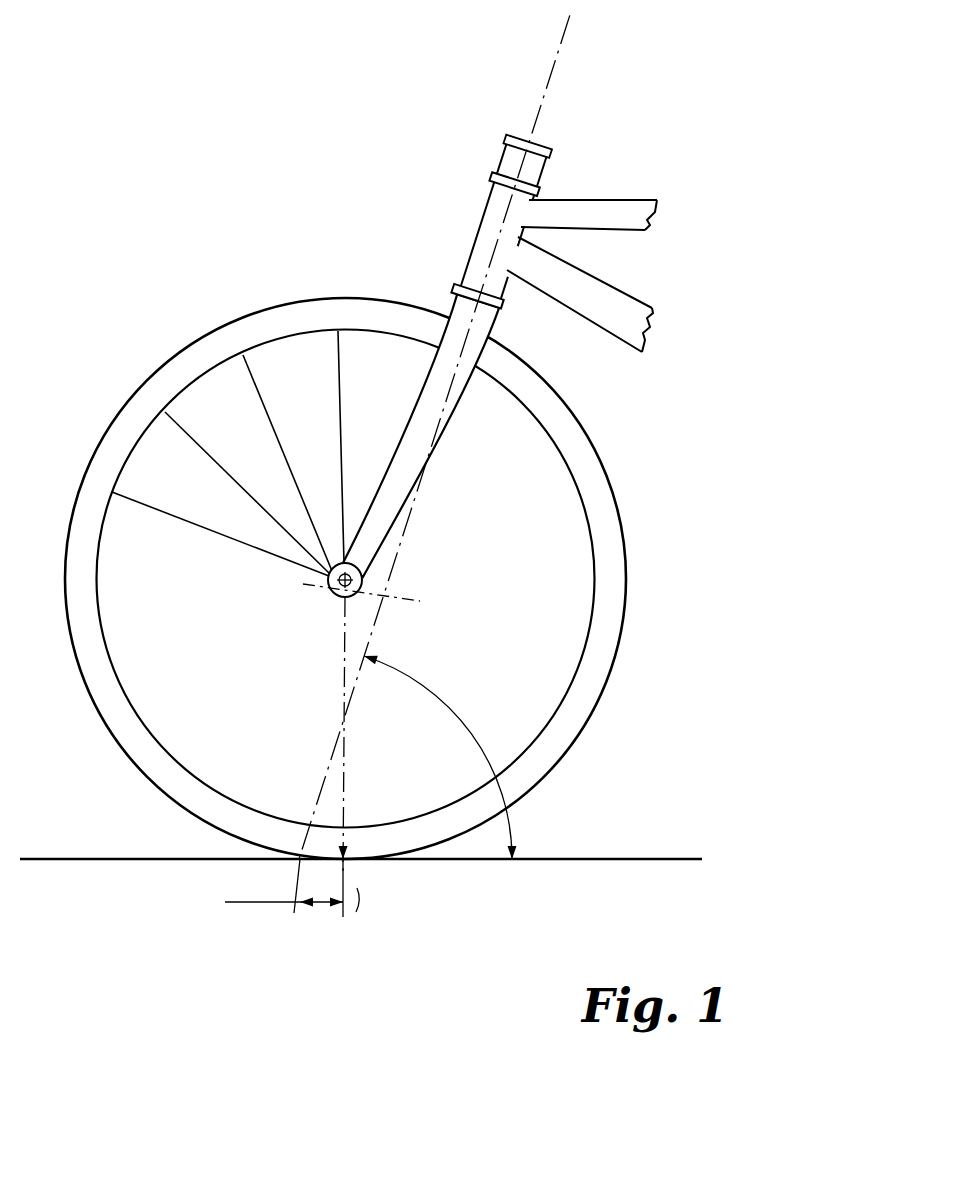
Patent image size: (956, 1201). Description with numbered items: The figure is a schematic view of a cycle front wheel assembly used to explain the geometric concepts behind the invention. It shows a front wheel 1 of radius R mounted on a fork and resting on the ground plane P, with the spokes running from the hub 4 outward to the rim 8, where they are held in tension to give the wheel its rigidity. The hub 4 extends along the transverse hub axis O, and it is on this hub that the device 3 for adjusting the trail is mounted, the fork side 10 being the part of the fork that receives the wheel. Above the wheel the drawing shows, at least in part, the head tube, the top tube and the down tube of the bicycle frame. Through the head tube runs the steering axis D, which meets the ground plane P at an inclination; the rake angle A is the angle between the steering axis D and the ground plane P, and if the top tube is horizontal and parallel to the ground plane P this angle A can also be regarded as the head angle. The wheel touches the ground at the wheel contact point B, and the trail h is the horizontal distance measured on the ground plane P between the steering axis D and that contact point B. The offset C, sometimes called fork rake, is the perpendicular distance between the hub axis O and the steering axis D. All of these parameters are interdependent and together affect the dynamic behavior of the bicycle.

The wheel 1 is at (373, 578).
The device for adjusting the trail 3 is at (357, 515).
The hub 4 is at (320, 578).
The rim 8 is at (606, 597).
The fork side 10 is at (433, 372).
The steering axis D is at (547, 73).
The offset C is at (352, 561).
The hub axis O is at (330, 593).
The rake angle A is at (440, 757).
The radius R is at (350, 801).
The wheel contact point B is at (342, 900).
The trail h is at (292, 888).
The ground plane P is at (648, 860).